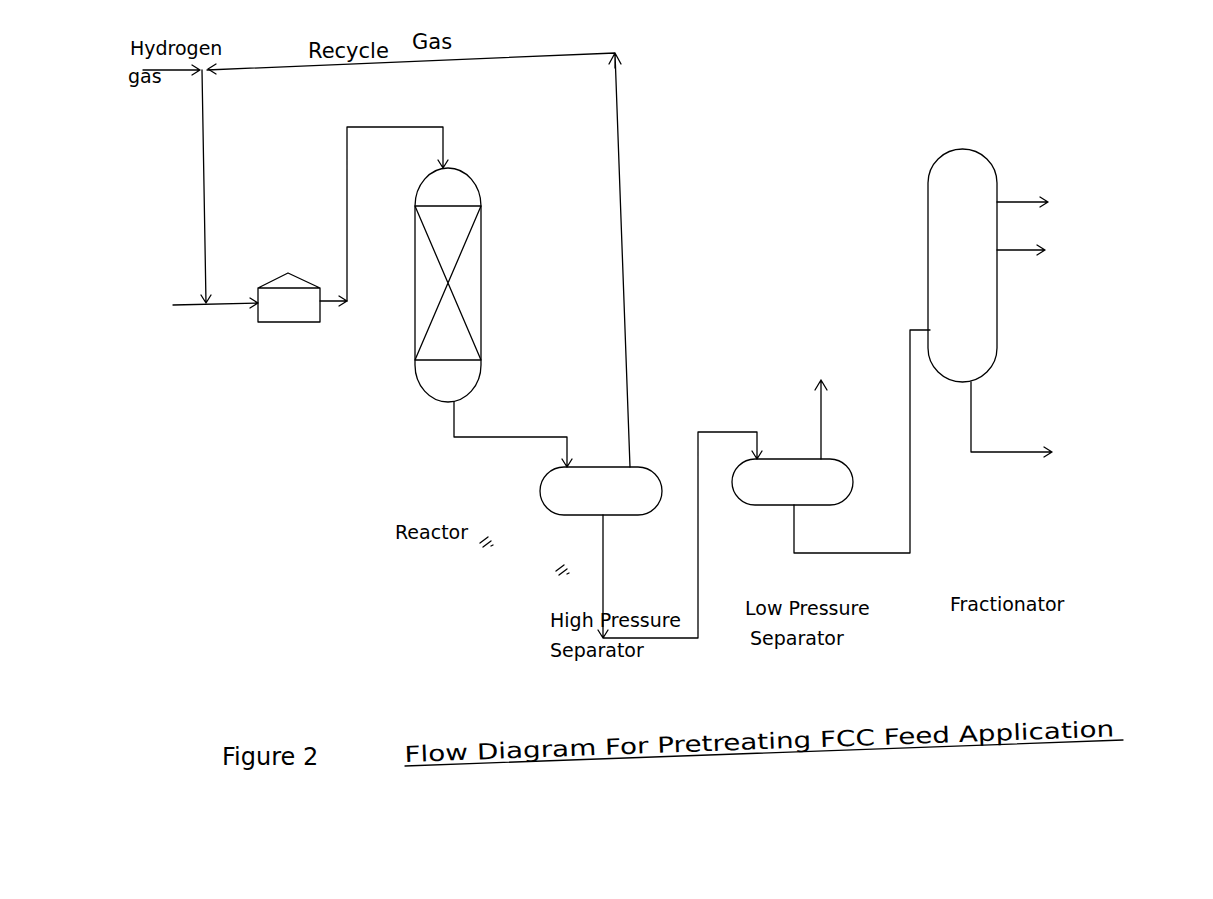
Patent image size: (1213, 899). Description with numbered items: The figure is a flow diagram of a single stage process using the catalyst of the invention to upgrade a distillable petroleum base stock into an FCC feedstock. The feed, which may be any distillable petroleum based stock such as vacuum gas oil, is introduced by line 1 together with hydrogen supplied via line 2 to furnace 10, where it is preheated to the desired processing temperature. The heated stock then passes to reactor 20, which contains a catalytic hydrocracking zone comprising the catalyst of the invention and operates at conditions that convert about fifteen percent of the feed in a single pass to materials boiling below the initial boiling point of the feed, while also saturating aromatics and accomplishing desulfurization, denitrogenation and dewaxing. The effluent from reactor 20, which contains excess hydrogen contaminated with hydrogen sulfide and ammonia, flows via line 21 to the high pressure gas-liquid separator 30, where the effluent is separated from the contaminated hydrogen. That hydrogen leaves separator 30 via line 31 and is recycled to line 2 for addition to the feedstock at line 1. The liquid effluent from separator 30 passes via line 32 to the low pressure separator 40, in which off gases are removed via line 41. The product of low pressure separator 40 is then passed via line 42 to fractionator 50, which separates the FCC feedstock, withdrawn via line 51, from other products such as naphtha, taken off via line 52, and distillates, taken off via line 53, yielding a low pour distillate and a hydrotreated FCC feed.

The line 1 is at (197, 317).
The line 2 is at (192, 183).
The furnace 10 is at (302, 297).
The reactor 20 is at (448, 285).
The line 21 is at (513, 434).
The high pressure gas-liquid separator 30 is at (601, 491).
The line 31 is at (439, 260).
The line 32 is at (680, 535).
The low pressure separator 40 is at (792, 482).
The line 41 is at (828, 394).
The line 42 is at (862, 443).
The fractionator 50 is at (962, 265).
The line 51 is at (1067, 421).
The line 52 is at (1067, 192).
The line 53 is at (1068, 244).